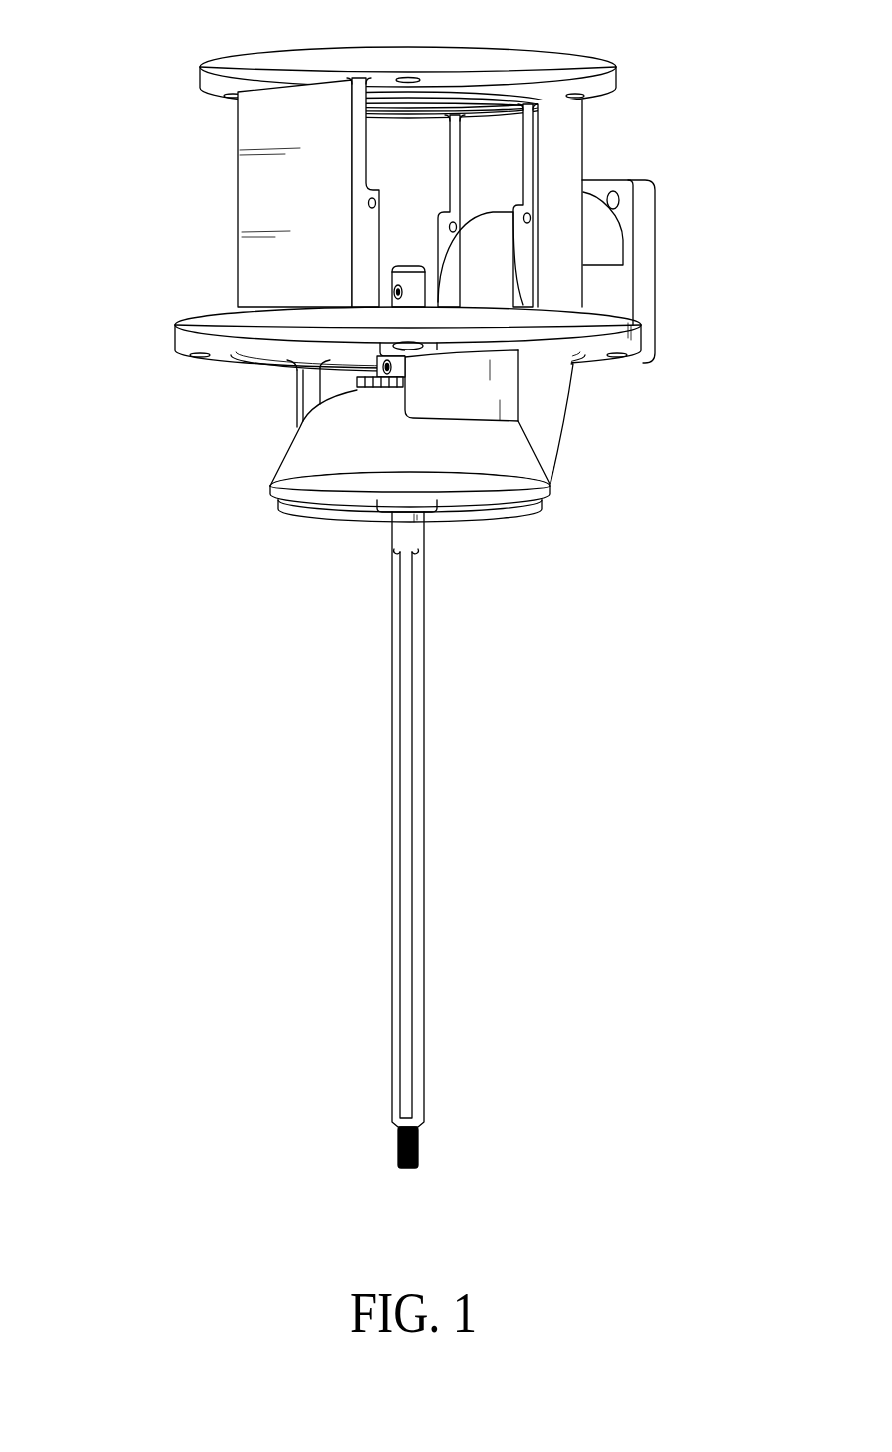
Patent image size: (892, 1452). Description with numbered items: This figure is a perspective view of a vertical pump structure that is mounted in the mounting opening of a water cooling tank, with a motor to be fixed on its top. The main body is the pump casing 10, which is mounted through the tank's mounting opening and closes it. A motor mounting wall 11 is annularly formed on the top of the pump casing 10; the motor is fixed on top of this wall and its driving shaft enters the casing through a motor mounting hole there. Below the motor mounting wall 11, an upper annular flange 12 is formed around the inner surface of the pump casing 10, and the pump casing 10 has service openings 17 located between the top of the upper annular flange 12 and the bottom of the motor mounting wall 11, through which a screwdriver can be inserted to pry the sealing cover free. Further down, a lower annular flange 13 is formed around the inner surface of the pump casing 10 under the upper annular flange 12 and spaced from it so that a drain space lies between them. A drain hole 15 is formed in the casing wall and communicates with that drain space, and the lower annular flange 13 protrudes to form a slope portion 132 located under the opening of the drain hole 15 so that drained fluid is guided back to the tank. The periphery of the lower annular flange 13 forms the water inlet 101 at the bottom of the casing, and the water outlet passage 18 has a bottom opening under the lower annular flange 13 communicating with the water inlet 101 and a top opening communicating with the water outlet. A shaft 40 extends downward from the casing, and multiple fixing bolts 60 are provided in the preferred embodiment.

The pump casing 10 is at (183, 172).
The motor mounting wall 11 is at (285, 62).
The upper annular flange 12 is at (205, 325).
The lower annular flange 13 is at (283, 473).
The slope portion 132 is at (337, 449).
The drain hole 15 is at (308, 380).
The service openings 17 is at (505, 160).
The water outlet passage 18 is at (560, 410).
The shaft 40 is at (418, 542).
The fixing bolts 60 is at (382, 369).
The water inlet 101 is at (343, 536).